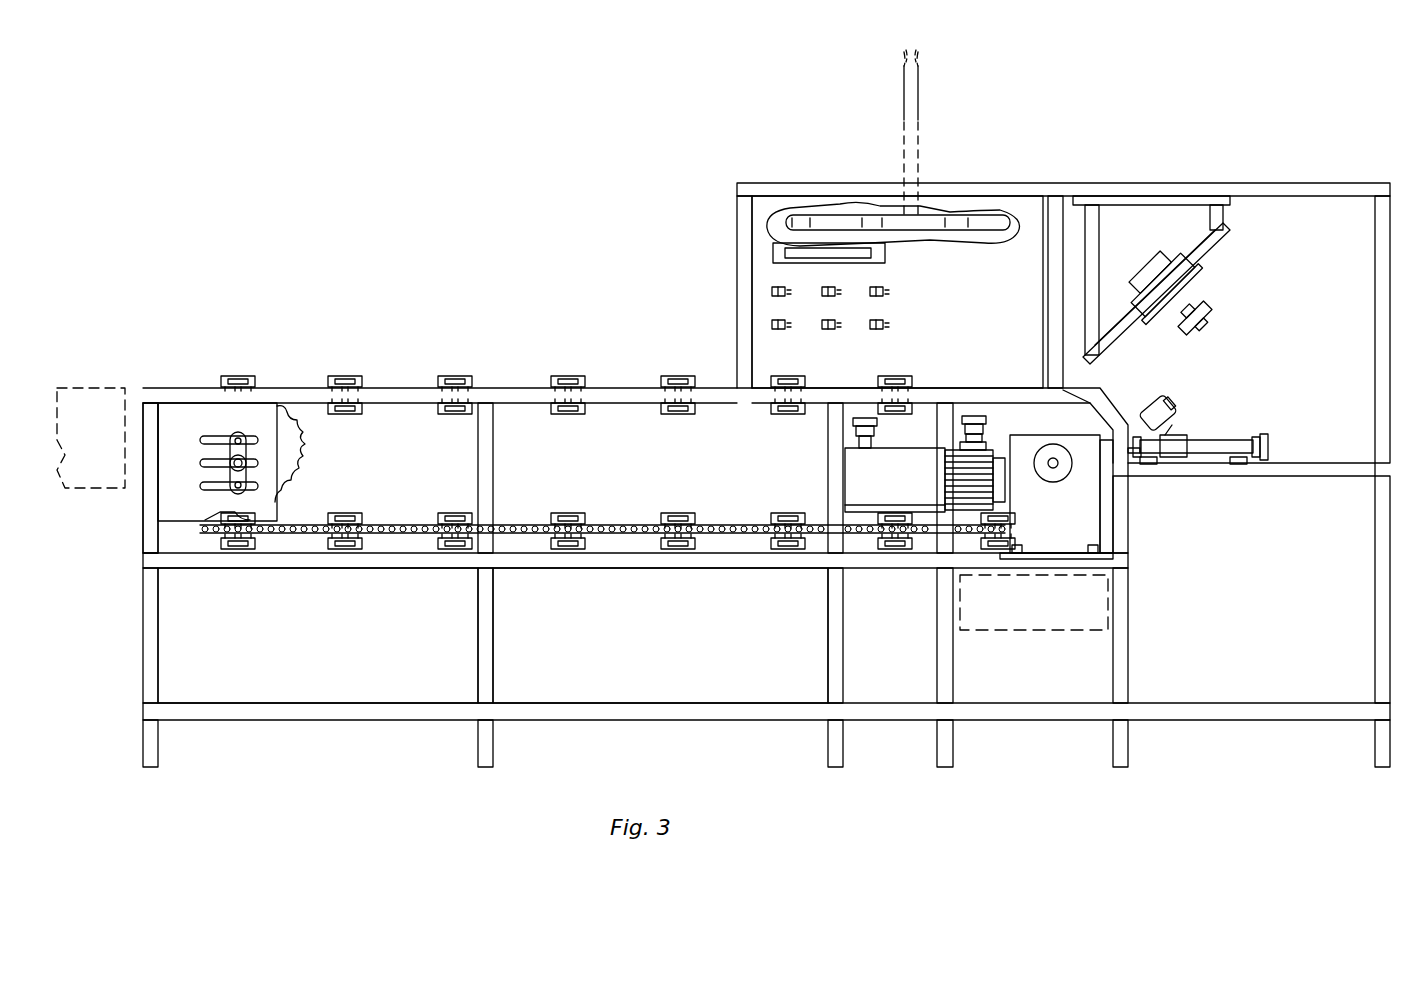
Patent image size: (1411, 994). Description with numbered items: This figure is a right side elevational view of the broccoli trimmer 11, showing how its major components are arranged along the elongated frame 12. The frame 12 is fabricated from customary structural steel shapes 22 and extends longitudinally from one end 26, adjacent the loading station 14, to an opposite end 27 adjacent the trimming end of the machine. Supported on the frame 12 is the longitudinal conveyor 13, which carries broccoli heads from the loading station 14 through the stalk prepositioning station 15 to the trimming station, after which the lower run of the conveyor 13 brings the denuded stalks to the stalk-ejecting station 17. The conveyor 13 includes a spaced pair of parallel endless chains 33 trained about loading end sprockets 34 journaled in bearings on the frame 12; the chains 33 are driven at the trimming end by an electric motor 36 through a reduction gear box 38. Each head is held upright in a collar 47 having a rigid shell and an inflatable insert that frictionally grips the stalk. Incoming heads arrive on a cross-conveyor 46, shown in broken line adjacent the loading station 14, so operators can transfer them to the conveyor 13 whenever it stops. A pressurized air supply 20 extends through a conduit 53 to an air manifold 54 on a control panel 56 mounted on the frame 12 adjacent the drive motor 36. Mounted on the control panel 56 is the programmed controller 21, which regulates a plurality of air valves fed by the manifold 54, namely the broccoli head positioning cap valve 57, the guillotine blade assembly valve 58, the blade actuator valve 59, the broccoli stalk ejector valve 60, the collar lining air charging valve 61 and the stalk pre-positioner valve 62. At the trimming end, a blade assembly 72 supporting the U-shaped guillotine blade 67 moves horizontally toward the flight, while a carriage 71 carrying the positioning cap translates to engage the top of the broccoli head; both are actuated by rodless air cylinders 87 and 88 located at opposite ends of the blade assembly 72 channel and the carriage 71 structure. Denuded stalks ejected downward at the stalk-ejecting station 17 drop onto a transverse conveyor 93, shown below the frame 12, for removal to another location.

The broccoli trimmer 11 is at (440, 255).
The elongated frame 12 is at (355, 718).
The longitudinal conveyor 13 is at (527, 392).
The loading station 14 is at (213, 330).
The stalk prepositioning station 15 is at (870, 445).
The stalk-ejecting station 17 is at (986, 432).
The pressurized air supply 20 is at (902, 58).
The programmed controller 21 is at (970, 322).
The structural steel shapes 22 is at (478, 600).
The end of frame 26 is at (143, 625).
The opposite end of frame 27 is at (1392, 185).
The endless chains 33 is at (368, 523).
The loading end sprockets 34 is at (283, 450).
The electric motor 36 is at (906, 489).
The reduction gear box 38 is at (1071, 524).
The cross-conveyor 46 is at (110, 388).
The collar 47 is at (672, 413).
The conduit 53 is at (920, 102).
The air manifold 54 is at (955, 232).
The control panel 56 is at (935, 290).
The broccoli head positioning cap valve 57 is at (972, 205).
The guillotine blade assembly valve 58 is at (945, 205).
The blade actuator valve 59 is at (884, 205).
The broccoli stalk ejector valve 60 is at (862, 205).
The collar lining air charging valve 61 is at (812, 205).
The stalk pre-positioner valve 62 is at (790, 205).
The U-shaped guillotine blade 67 is at (1172, 400).
The carriage 71 is at (1218, 316).
The blade assembly 72 is at (1185, 422).
The rodless air cylinder 87 is at (1252, 420).
The rodless air cylinder 88 is at (1215, 282).
The transverse conveyor 93 is at (985, 630).